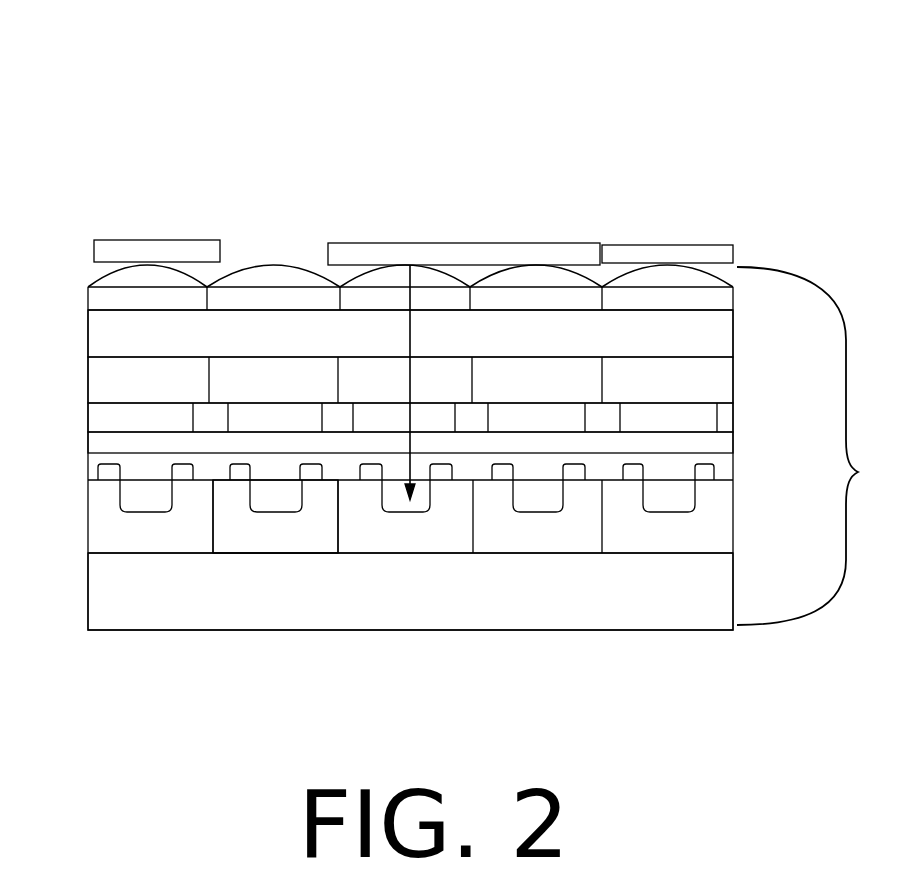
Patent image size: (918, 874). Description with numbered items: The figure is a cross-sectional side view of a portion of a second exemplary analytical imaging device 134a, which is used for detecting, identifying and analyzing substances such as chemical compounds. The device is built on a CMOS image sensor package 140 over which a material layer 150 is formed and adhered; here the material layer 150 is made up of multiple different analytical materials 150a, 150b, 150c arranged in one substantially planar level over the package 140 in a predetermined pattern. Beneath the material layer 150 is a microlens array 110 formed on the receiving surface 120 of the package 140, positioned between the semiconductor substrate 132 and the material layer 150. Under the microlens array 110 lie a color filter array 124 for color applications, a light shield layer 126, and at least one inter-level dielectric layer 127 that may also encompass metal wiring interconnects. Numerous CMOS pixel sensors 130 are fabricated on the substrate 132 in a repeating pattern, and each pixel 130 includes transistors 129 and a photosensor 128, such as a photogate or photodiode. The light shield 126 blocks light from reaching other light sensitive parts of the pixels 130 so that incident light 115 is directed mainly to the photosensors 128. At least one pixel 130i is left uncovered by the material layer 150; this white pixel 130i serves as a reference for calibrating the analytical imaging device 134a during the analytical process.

The analytical imaging device 134a is at (143, 72).
The microlens array 110 is at (92, 277).
The incident light 115 is at (412, 500).
The receiving surface 120 is at (718, 333).
The color filter array 124 is at (718, 383).
The light shield layer 126 is at (733, 414).
The inter-level dielectric layer 127 is at (97, 440).
The photosensor 128 is at (125, 490).
The transistors 129 is at (97, 466).
The CMOS pixel sensor 130 is at (101, 541).
The white pixel 130i is at (271, 540).
The semiconductor substrate 132 is at (424, 612).
The CMOS image sensor package 140 is at (815, 446).
The material layer 150 is at (92, 252).
The first material 150a is at (176, 251).
The second material 150b is at (416, 256).
The third material 150c is at (653, 252).